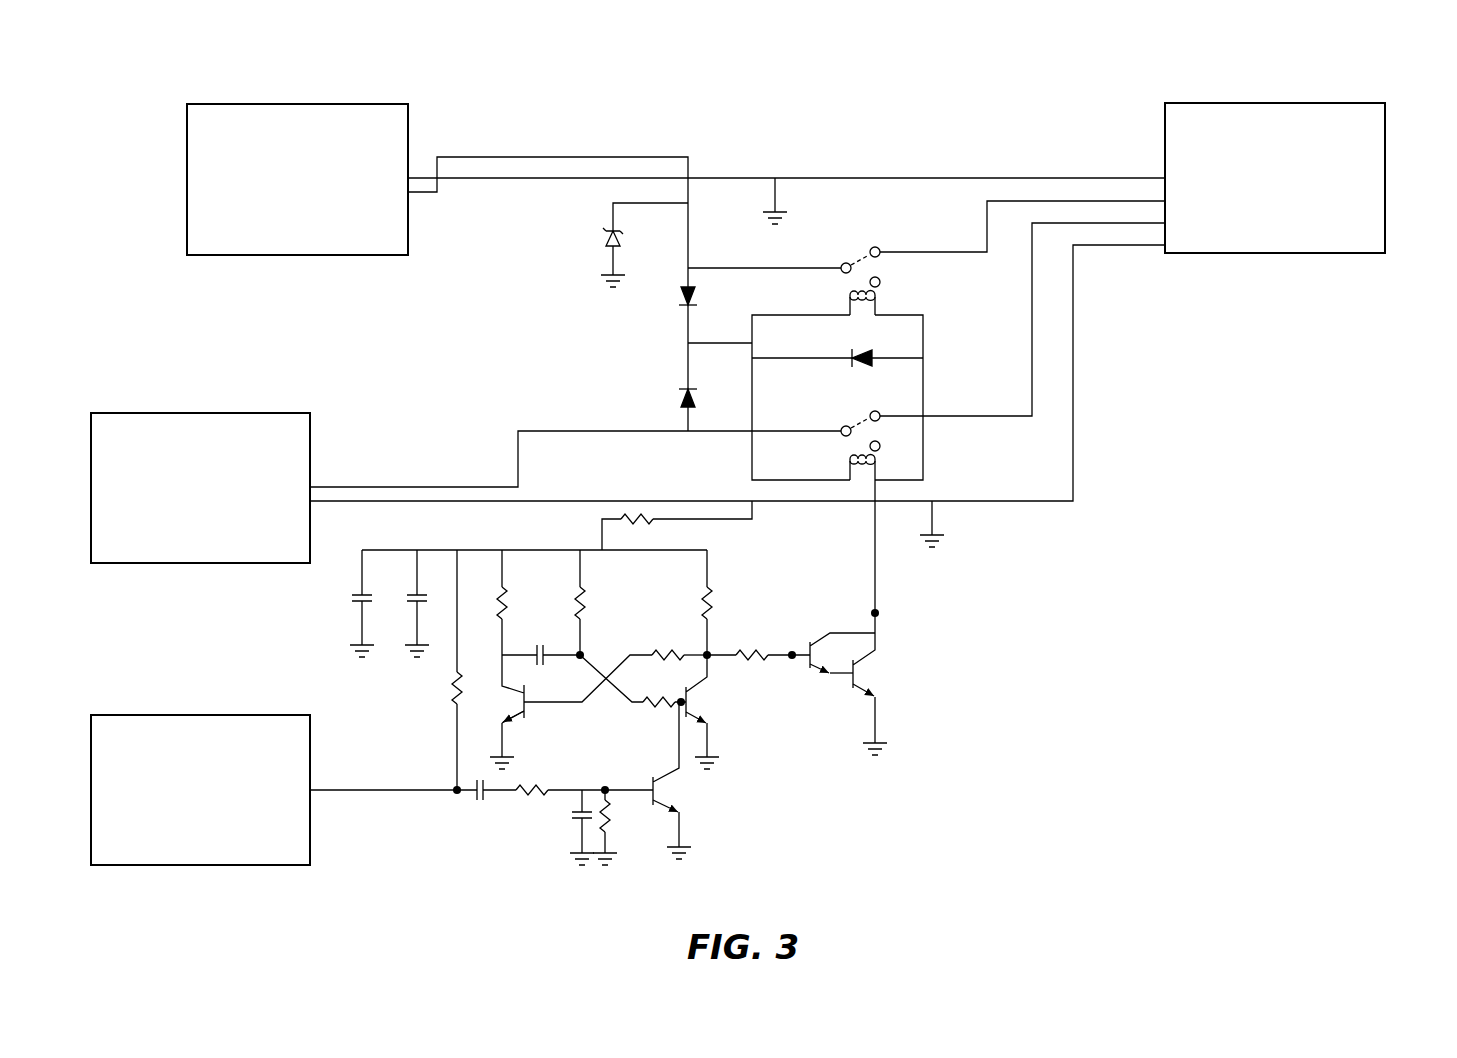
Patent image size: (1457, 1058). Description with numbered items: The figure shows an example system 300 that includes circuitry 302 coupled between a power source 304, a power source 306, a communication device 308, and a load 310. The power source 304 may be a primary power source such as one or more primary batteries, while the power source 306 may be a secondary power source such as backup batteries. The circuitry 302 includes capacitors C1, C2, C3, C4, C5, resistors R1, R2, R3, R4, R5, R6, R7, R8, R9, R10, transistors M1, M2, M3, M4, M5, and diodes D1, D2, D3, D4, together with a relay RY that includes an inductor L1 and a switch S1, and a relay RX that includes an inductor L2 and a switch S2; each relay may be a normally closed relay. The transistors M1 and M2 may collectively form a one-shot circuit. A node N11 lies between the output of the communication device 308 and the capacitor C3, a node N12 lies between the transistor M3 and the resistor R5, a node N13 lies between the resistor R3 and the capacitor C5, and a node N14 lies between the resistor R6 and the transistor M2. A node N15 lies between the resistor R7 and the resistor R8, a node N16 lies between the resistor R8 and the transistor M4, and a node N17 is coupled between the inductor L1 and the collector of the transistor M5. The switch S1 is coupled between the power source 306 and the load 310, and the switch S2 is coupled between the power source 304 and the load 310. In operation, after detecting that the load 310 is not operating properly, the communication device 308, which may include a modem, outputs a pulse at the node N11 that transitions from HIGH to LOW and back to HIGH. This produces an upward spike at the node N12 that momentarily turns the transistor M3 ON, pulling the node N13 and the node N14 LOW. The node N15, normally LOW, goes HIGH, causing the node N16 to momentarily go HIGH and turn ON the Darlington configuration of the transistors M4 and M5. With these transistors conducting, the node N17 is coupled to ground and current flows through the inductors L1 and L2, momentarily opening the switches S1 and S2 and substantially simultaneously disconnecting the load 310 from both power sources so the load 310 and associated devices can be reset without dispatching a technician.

The system 300 is at (1391, 88).
The circuitry 302 is at (1027, 98).
The power source 304 is at (297, 179).
The power source 306 is at (200, 488).
The communication device 308 is at (200, 790).
The load 310 is at (1275, 178).
The relay RX is at (902, 238).
The relay RY is at (935, 403).
The switch S1 is at (1001, 337).
The switch S2 is at (926, 244).
The inductor L1 is at (842, 464).
The inductor L2 is at (842, 300).
The diode D1 is at (837, 370).
The diode D2 is at (644, 245).
The diode D3 is at (668, 303).
The diode D4 is at (668, 393).
The resistor R1 is at (442, 670).
The resistor R2 is at (518, 602).
The resistor R3 is at (596, 602).
The resistor R4 is at (584, 777).
The resistor R5 is at (618, 827).
The resistor R6 is at (633, 695).
The resistor R7 is at (679, 641).
The resistor R8 is at (758, 641).
The resistor R9 is at (723, 602).
The resistor R10 is at (677, 527).
The capacitor C1 is at (349, 603).
The capacitor C2 is at (430, 603).
The capacitor C3 is at (492, 803).
The capacitor C4 is at (569, 827).
The capacitor C5 is at (541, 644).
The transistor M1 is at (569, 712).
The transistor M2 is at (706, 712).
The transistor M3 is at (674, 780).
The transistor M4 is at (842, 653).
The transistor M5 is at (872, 684).
The node N11 is at (455, 793).
The node N12 is at (607, 787).
The node N13 is at (583, 653).
The node N14 is at (679, 700).
The node N15 is at (710, 658).
The node N16 is at (793, 660).
The node N17 is at (878, 611).